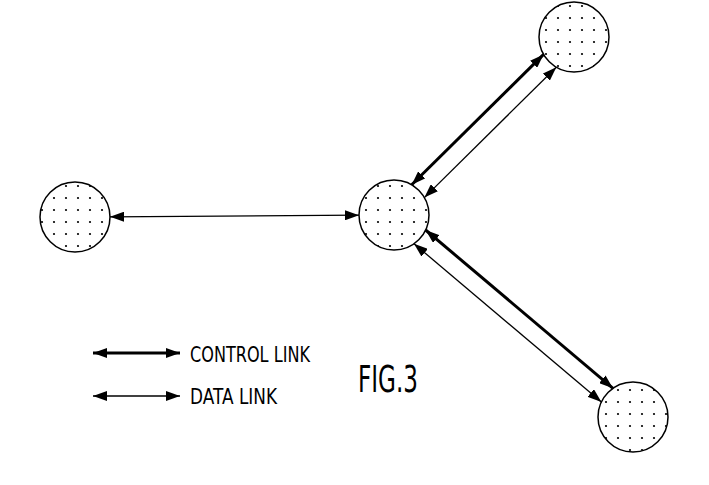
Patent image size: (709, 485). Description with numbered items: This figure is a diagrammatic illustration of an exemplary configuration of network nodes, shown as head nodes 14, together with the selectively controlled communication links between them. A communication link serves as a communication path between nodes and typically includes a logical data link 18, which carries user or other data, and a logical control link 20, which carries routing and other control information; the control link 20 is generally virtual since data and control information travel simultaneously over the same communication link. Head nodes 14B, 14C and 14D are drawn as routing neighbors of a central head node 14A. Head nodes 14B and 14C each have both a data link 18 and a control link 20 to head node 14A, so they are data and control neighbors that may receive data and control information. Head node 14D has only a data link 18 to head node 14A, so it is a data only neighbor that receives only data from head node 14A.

The head node 14 is at (0, 10).
The head node 14A is at (371, 190).
The head node 14B is at (541, 24).
The head node 14C is at (605, 436).
The head node 14D is at (42, 227).
The logical data link 18 is at (475, 147).
The logical control link 20 is at (473, 123).